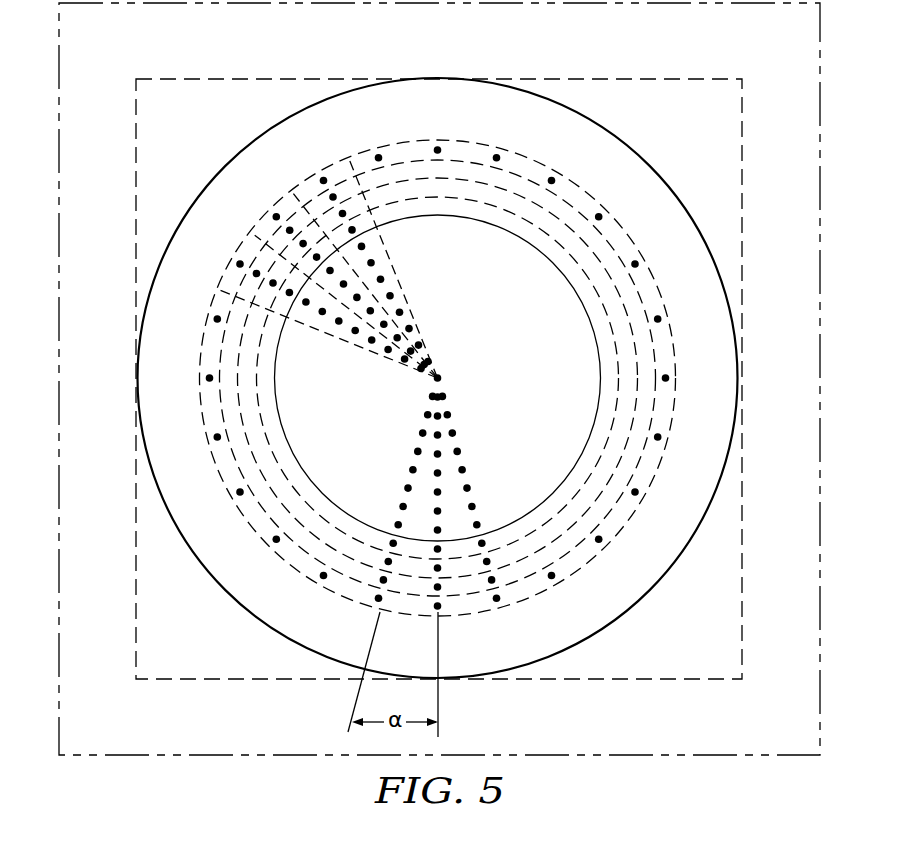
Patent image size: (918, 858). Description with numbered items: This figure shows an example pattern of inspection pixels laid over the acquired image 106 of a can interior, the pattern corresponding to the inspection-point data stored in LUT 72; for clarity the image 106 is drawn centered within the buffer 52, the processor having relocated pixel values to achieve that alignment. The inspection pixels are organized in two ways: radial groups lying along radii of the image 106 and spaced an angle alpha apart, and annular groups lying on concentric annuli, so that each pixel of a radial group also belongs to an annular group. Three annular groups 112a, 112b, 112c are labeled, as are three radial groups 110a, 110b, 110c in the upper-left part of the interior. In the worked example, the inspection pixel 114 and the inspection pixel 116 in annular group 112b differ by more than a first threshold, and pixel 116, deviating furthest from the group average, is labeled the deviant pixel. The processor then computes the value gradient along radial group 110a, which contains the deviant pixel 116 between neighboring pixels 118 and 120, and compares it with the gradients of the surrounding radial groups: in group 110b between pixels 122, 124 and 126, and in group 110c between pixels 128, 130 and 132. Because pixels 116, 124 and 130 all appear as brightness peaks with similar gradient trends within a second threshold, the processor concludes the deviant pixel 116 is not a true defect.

The buffer 52 is at (742, 756).
The LUT 72 is at (680, 680).
The image 106 is at (630, 145).
The radial group 110a is at (380, 313).
The radial group 110b is at (362, 340).
The radial group 110c is at (388, 262).
The annular group 112a is at (660, 357).
The annular group 112b is at (623, 305).
The annular group 112c is at (580, 260).
The inspection pixel 114 is at (492, 580).
The inspection pixel 116 is at (303, 244).
The inspection pixel 118 is at (317, 257).
The inspection pixel 120 is at (276, 217).
The inspection pixel 122 is at (273, 285).
The inspection pixel 124 is at (218, 319).
The inspection pixel 126 is at (240, 264).
The inspection pixel 128 is at (343, 213).
The inspection pixel 130 is at (333, 197).
The inspection pixel 132 is at (323, 181).